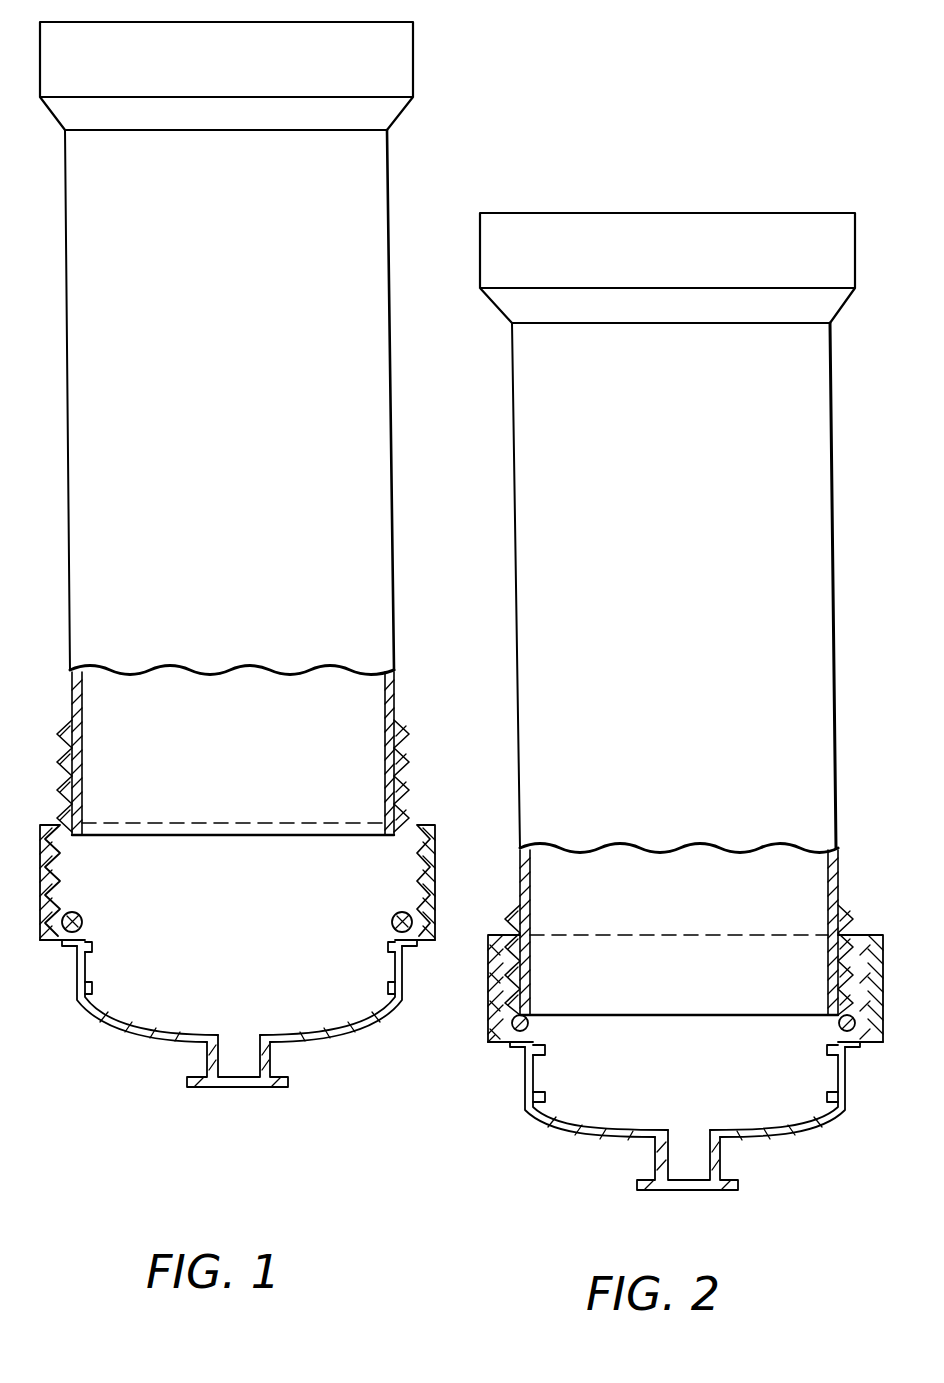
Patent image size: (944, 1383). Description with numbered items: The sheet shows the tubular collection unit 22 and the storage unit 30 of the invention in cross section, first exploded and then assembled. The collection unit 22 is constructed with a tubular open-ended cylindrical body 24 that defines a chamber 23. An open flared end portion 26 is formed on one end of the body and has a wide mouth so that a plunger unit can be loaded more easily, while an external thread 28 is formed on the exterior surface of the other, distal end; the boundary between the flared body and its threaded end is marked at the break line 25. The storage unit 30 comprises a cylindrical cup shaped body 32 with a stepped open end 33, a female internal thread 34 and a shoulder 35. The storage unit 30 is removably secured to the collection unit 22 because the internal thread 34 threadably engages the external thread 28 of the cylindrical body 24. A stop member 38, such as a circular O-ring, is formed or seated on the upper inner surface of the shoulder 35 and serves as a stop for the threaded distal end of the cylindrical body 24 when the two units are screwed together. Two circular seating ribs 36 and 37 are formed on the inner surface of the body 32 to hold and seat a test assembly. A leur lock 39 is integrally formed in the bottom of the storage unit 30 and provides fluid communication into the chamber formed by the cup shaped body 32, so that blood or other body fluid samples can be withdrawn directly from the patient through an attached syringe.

In FIG. 1, the tubular collection unit 22 is at (275, 346).
In FIG. 2, the tubular collection unit 22 is at (683, 504).
In FIG. 1, the chamber 23 is at (221, 766).
In FIG. 2, the chamber 23 is at (651, 914).
In FIG. 1, the cylindrical body 24 is at (394, 210).
In FIG. 2, the cylindrical body 24 is at (832, 383).
In FIG. 1, the break line / shoulder of neck 25 is at (386, 690).
In FIG. 2, the break line / shoulder of neck 25 is at (828, 882).
In FIG. 1, the flared end portion 26 is at (413, 58).
In FIG. 2, the flared end portion 26 is at (855, 228).
In FIG. 1, the external thread 28 is at (413, 760).
In FIG. 2, the external thread 28 is at (847, 900).
In FIG. 1, the storage unit 30 is at (240, 985).
In FIG. 2, the storage unit 30 is at (682, 1070).
In FIG. 1, the cup shaped body 32 is at (350, 1040).
In FIG. 2, the cup shaped body 32 is at (570, 1136).
In FIG. 1, the stepped open end 33 is at (438, 920).
In FIG. 2, the stepped open end 33 is at (885, 1050).
In FIG. 1, the internal thread 34 is at (417, 888).
In FIG. 2, the internal thread 34 is at (884, 956).
In FIG. 1, the shoulder 35 is at (60, 944).
In FIG. 2, the shoulder 35 is at (508, 1046).
In FIG. 1, the seating rib 36 is at (92, 946).
In FIG. 2, the seating rib 36 is at (827, 1050).
In FIG. 1, the seating rib 37 is at (92, 988).
In FIG. 2, the seating rib 37 is at (827, 1094).
In FIG. 1, the stop member 38 is at (80, 912).
In FIG. 2, the stop member 38 is at (532, 1022).
In FIG. 1, the leur lock 39 is at (276, 1088).
In FIG. 2, the leur lock 39 is at (740, 1189).